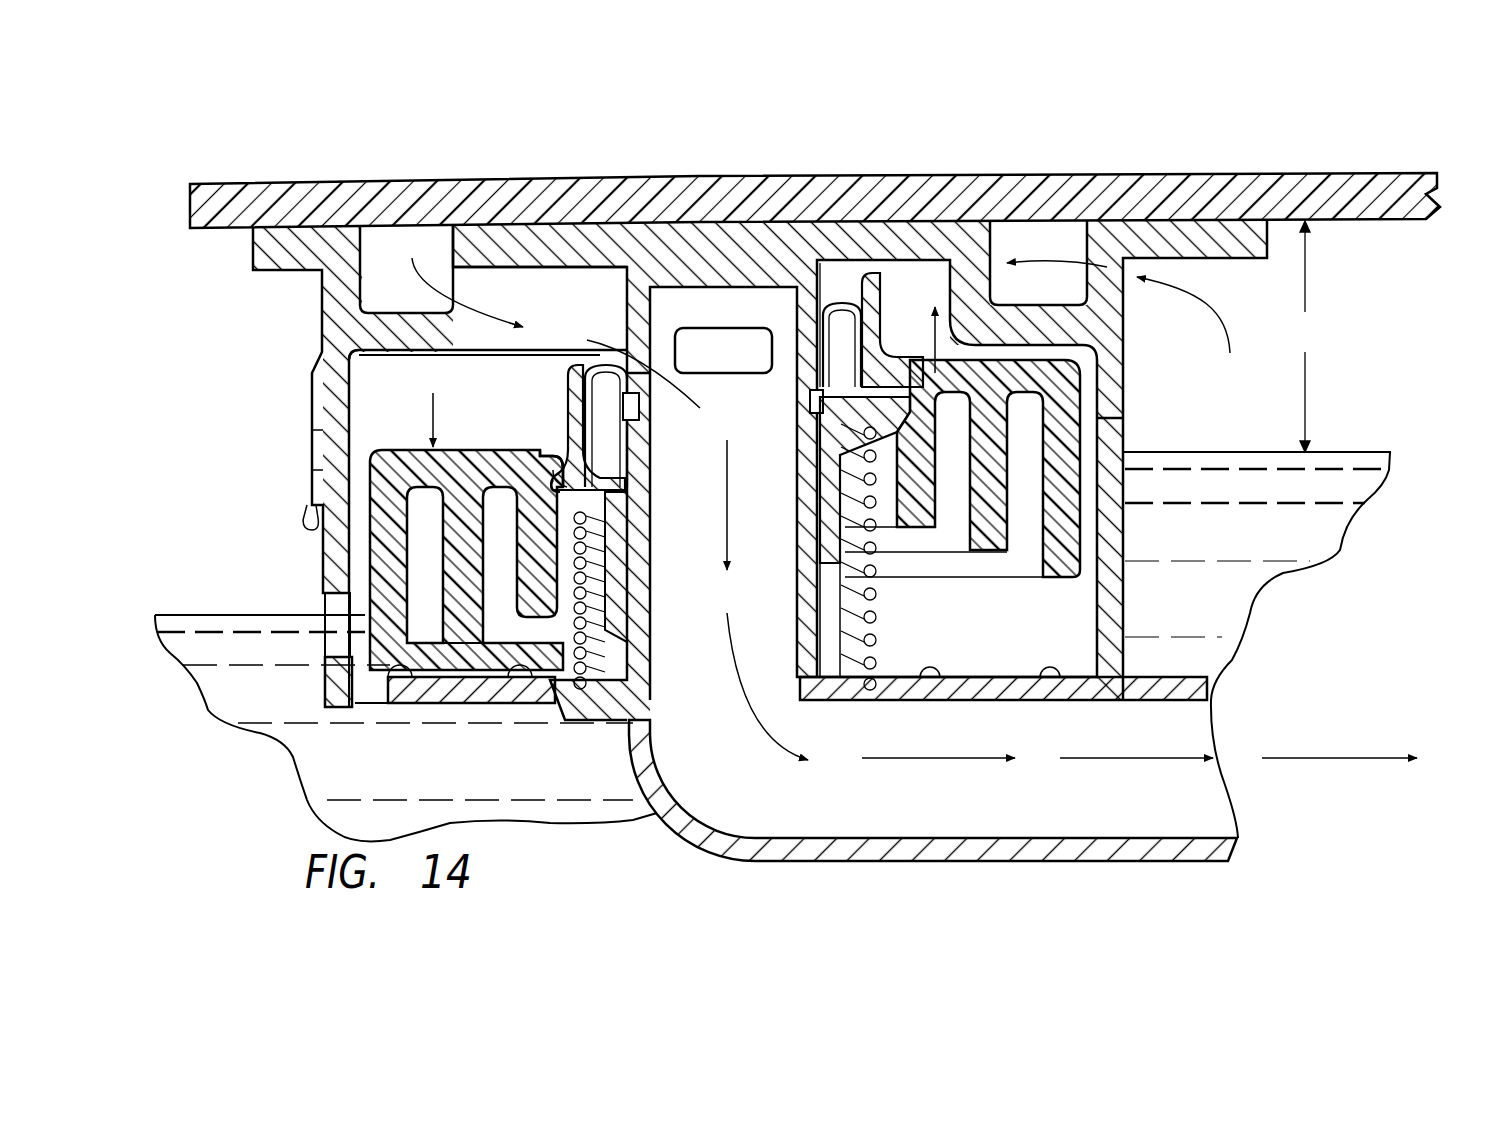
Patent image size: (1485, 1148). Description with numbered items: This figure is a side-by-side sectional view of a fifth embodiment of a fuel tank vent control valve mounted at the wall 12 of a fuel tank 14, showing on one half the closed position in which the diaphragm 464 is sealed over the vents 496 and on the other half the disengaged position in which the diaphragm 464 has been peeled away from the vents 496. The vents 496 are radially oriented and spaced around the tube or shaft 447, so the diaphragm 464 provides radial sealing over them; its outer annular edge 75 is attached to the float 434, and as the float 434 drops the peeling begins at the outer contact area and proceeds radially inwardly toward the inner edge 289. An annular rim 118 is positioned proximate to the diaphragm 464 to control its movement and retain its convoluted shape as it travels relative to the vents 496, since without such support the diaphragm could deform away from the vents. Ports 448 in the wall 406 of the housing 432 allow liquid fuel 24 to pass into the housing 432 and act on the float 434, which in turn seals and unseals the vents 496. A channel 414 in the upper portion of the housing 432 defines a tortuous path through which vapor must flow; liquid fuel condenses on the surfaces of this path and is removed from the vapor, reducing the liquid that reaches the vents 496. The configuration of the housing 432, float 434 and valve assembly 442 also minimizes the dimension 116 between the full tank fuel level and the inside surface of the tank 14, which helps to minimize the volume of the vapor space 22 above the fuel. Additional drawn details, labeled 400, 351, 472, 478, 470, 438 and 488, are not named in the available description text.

The fuel tank 14 is at (1354, 168).
The wall 12 is at (1404, 206).
The slot passage 400 is at (365, 283).
The housing 432 is at (320, 362).
The wall 406 is at (325, 550).
The ports 448 is at (337, 594).
The outer annular edge 75 is at (560, 478).
The vents 496 is at (628, 343).
The passage 351 is at (611, 278).
The valve assembly 442 is at (557, 352).
The channel 414 is at (1037, 232).
The vapor space 22 is at (1230, 404).
The dimension 116 is at (1313, 336).
The liquid fuel 24 is at (1257, 542).
The float 434 is at (365, 463).
The annular rim 118 is at (567, 440).
The diaphragm 464 is at (562, 356).
The inner edge 289 is at (637, 412).
The spring seat 472 is at (618, 440).
The tube or shaft 447 is at (640, 617).
The right lip seal 478 is at (836, 310).
The seal holder 470 is at (833, 567).
The spring 438 is at (878, 638).
The elbow passage 488 is at (720, 775).